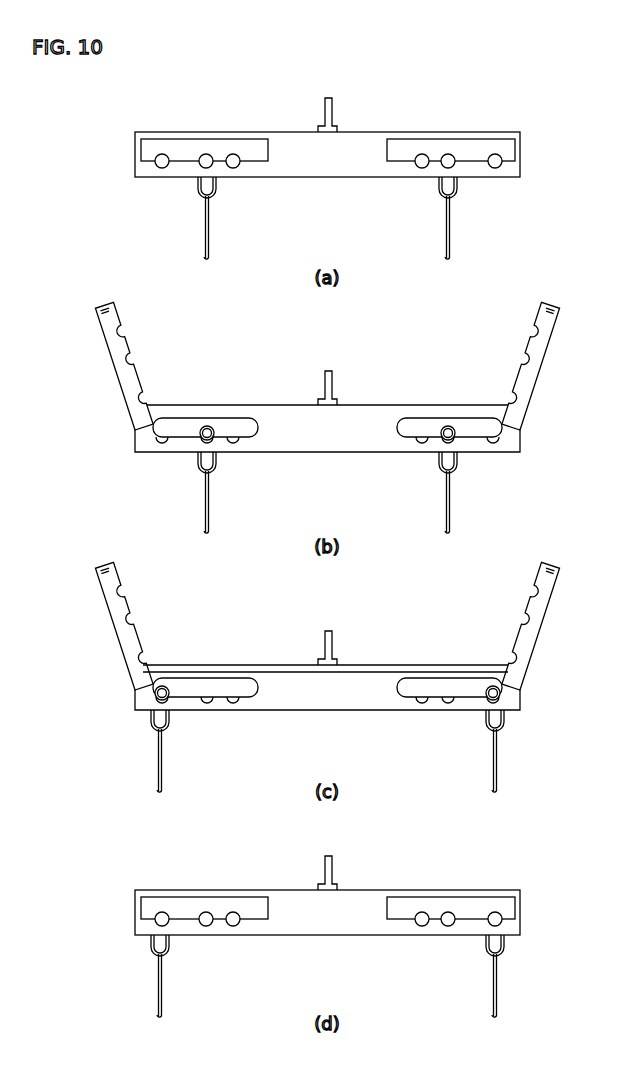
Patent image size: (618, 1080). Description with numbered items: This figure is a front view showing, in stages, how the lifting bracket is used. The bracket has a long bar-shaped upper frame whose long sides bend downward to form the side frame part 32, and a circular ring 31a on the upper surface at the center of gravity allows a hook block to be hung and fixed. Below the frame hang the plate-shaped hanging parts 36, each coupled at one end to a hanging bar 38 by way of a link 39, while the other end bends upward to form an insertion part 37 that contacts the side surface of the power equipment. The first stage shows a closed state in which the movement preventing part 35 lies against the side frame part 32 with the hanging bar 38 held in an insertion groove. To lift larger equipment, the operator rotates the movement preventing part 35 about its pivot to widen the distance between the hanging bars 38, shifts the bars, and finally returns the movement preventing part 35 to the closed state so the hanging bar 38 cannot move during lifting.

The circular ring 31a is at (325, 99).
The side frame part 32 is at (372, 140).
The movement preventing part 35 is at (183, 139).
The hanging part 36 is at (202, 230).
The insertion part 37 is at (209, 256).
The hanging bar 38 is at (207, 154).
The link 39 is at (196, 187).